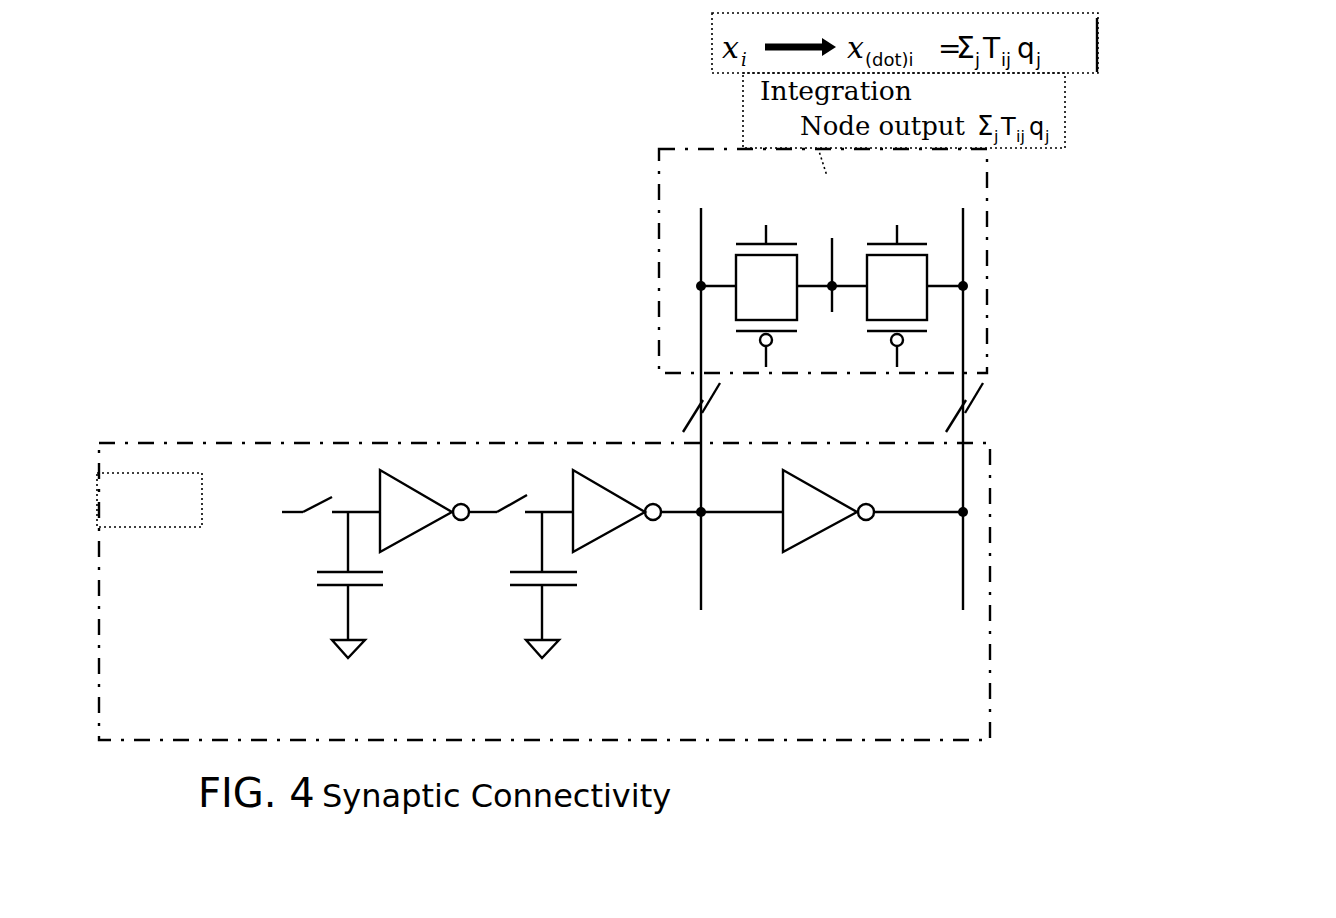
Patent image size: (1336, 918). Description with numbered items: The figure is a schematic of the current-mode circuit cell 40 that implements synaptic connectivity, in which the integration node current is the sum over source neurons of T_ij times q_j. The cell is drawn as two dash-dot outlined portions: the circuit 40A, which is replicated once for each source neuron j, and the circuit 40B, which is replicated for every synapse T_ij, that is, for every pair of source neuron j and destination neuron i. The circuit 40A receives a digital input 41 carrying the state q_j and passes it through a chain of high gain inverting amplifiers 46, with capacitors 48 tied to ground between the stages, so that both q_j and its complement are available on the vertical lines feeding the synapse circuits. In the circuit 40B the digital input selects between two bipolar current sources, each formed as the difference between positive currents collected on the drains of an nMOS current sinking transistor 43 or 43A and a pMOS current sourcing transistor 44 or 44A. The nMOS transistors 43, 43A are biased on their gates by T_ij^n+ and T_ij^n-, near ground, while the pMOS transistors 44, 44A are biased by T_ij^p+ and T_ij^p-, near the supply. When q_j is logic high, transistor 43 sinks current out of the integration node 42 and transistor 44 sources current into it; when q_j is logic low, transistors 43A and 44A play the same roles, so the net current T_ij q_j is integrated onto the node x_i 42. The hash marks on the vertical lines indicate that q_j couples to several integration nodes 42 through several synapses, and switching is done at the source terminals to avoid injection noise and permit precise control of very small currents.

The synaptic connectivity circuit 40 is at (408, 275).
The circuit replicated once for each source neuron 40A is at (240, 447).
The circuit replicated for every synapse 40B is at (1033, 265).
The input switch 41 is at (282, 512).
The integration node 42 is at (832, 291).
The nMOS current sinking transistor 43 is at (750, 272).
The nMOS current sinking transistor 43A is at (945, 240).
The pMOS current sourcing transistor 44 is at (750, 333).
The pMOS current sourcing transistor 44A is at (923, 332).
The high gain inverting amplifier 46 is at (416, 535).
The capacitor 48 is at (330, 587).